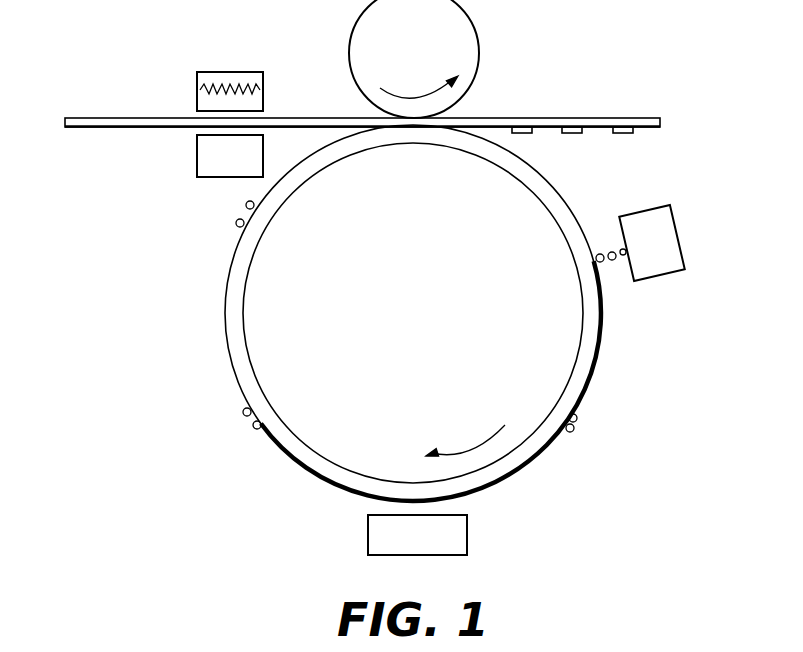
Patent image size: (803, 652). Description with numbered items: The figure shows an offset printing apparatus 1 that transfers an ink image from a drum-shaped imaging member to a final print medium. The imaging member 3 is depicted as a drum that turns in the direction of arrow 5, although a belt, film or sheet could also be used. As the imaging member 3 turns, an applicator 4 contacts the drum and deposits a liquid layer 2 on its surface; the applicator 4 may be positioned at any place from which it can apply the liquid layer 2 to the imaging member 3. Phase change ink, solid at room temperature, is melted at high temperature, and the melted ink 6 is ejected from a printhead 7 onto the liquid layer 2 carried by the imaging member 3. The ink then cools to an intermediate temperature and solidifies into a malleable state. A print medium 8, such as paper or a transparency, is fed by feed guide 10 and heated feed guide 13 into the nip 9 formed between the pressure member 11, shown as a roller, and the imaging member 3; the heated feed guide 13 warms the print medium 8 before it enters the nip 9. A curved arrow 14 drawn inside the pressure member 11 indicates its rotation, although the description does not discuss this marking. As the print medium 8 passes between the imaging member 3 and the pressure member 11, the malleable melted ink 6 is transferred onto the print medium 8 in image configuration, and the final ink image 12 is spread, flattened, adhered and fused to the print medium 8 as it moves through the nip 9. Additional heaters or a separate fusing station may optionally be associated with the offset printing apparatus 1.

The offset printing apparatus 1 is at (600, 70).
The liquid layer 2 is at (603, 333).
The imaging member 3 is at (577, 366).
The applicator 4 is at (467, 530).
The arrow 5 is at (475, 440).
The melted ink 6 is at (235, 213).
The printhead 7 is at (676, 237).
The print medium 8 is at (86, 118).
The nip 9 is at (358, 110).
The feed guide 10 is at (210, 177).
The pressure member 11 is at (480, 45).
The final ink image 12 is at (630, 130).
The heated feed guide 13 is at (232, 72).
The rotation direction of roller 14 is at (440, 85).